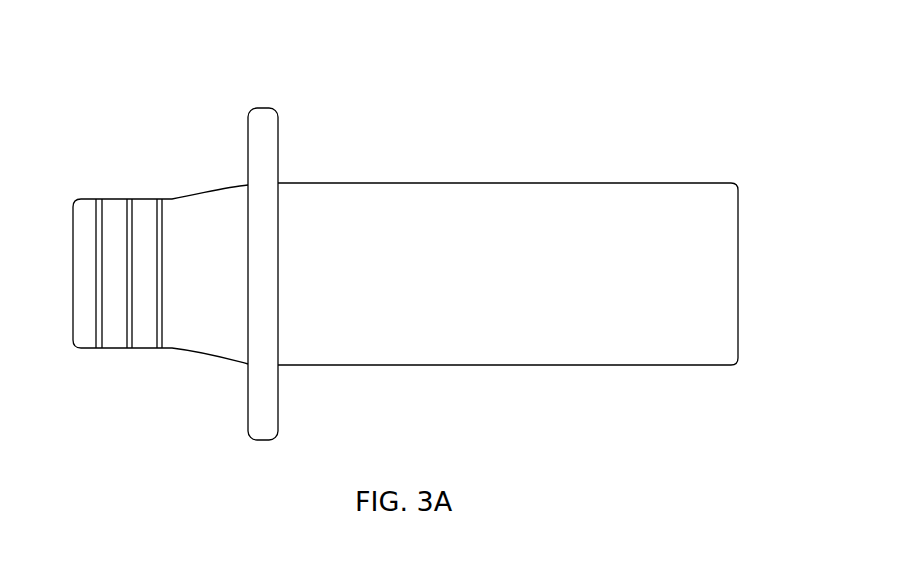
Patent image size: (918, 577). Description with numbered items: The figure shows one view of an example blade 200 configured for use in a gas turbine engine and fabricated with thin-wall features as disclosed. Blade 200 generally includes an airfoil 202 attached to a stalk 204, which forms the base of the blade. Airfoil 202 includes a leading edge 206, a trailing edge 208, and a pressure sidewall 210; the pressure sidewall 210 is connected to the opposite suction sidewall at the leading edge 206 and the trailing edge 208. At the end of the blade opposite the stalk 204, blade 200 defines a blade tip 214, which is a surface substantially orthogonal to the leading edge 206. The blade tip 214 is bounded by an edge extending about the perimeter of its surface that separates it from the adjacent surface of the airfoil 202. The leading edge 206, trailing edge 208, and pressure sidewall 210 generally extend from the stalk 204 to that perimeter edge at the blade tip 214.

The blade 200 is at (135, 86).
The airfoil 202 is at (462, 358).
The stalk 204 is at (173, 350).
The leading edge 206 is at (371, 366).
The trailing edge 208 is at (428, 183).
The pressure sidewall 210 is at (511, 290).
The blade tip 214 is at (748, 199).